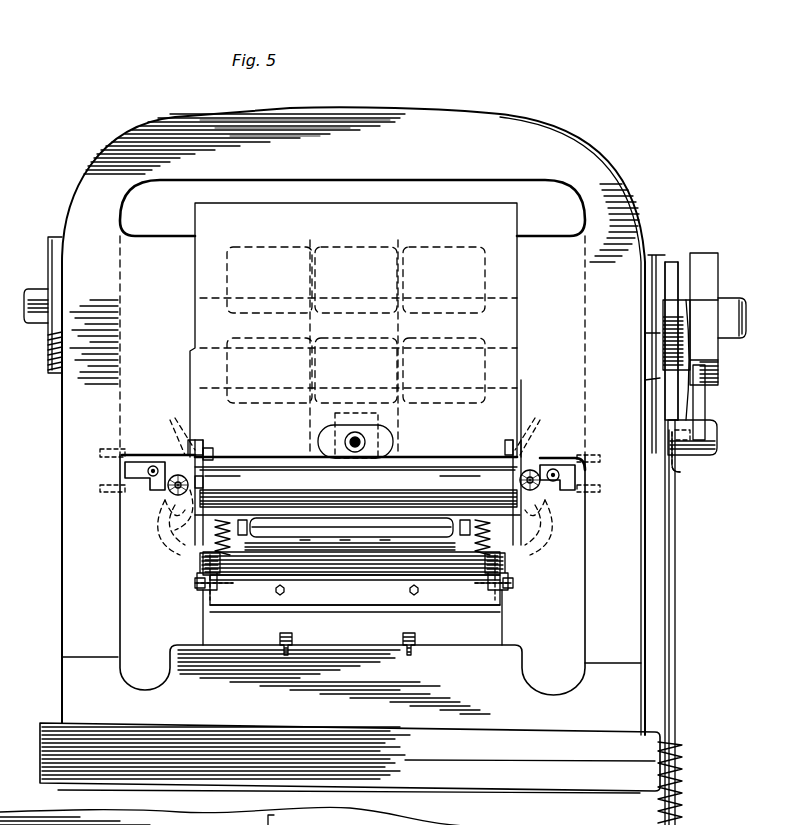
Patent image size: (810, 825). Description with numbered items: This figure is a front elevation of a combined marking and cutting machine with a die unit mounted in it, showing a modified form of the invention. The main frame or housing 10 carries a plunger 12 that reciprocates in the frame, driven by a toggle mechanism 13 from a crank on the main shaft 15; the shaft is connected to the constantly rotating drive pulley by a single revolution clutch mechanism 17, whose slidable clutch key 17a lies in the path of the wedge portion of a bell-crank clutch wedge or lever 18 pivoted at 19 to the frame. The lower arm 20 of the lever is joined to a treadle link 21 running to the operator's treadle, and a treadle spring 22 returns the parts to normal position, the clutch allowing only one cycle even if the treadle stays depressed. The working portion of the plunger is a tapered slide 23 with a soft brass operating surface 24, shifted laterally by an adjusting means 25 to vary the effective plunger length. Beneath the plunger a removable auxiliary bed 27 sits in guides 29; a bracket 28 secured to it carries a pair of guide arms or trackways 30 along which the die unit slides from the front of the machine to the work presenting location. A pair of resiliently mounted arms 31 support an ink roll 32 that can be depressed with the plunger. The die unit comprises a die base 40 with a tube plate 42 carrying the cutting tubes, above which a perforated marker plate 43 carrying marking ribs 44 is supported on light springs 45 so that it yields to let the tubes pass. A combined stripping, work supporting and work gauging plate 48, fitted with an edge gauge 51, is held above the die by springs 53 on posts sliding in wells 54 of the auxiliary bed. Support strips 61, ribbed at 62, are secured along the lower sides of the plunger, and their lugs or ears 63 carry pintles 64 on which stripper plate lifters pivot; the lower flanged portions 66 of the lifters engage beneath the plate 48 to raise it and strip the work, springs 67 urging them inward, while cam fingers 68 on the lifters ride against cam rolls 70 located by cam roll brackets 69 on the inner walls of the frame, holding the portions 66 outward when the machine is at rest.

The main frame or housing 10 is at (556, 133).
The plunger 12 is at (203, 217).
The toggle mechanism 13 is at (478, 313).
The main shaft 15 is at (730, 310).
The single revolution clutch mechanism 17 is at (683, 270).
The slidable clutch key 17a is at (705, 300).
The clutch wedge or lever 18 is at (690, 405).
The pivot 19 is at (705, 457).
The lower arm 20 is at (681, 468).
The treadle link 21 is at (675, 662).
The treadle spring 22 is at (682, 796).
The tapered plate or slide 23 is at (455, 500).
The operating surface 24 is at (400, 497).
The adjusting means 25 is at (355, 440).
The removable table or auxiliary bed 27 is at (490, 632).
The bracket 28 is at (215, 612).
The guides 29 is at (405, 637).
The guide arms or trackways 30 is at (199, 578).
The arms 31 is at (243, 520).
The ink roll 32 is at (300, 525).
The die base 40 is at (408, 568).
The tube plate 42 is at (433, 550).
The marker plate 43 is at (317, 548).
The marking ribs or projections 44 is at (378, 545).
The springs 45 is at (265, 548).
The combined stripping, work supporting and work gauging plate 48 is at (425, 512).
The edge gauge 51 is at (360, 512).
The springs 53 is at (215, 540).
The wells 54 is at (210, 592).
The support strips 61 is at (225, 465).
The ribs 62 is at (203, 480).
The lugs or ears 63 is at (208, 446).
The pintles or pivot shafts 64 is at (203, 488).
The concaved or flanged portions 66 is at (180, 505).
The springs 67 is at (180, 450).
The cam fingers 68 is at (183, 418).
The cam roll brackets 69 is at (160, 455).
The cam rolls 70 is at (160, 482).